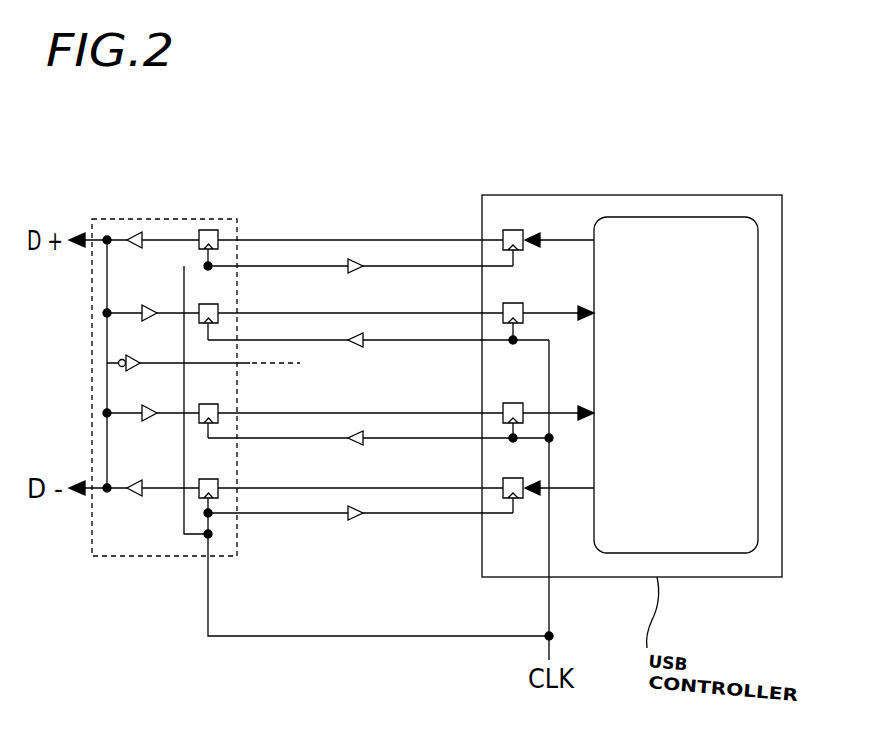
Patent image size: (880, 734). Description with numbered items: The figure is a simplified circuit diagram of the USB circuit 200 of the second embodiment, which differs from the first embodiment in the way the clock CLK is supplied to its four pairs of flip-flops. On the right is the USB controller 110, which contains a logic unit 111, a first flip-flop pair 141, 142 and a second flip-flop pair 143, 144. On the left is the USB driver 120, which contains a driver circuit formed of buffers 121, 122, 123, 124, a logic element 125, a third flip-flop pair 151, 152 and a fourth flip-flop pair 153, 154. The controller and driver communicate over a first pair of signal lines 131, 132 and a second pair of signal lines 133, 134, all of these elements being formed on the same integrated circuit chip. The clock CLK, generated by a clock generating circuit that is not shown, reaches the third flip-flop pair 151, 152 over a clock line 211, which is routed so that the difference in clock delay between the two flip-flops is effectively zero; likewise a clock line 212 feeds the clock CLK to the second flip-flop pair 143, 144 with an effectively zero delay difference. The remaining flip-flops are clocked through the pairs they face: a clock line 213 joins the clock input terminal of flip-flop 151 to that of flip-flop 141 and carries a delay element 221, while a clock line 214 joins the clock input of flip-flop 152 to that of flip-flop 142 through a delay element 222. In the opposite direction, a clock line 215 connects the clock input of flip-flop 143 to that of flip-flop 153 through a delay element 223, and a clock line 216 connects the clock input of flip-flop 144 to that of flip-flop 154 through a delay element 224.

The USB circuit 200 is at (748, 112).
The USB controller 110 is at (619, 195).
The logic unit 111 is at (759, 337).
The USB driver 120 is at (113, 218).
The buffer 121 is at (140, 232).
The buffer 122 is at (133, 481).
The buffer 123 is at (150, 305).
The buffer 124 is at (157, 395).
The logic element 125 is at (134, 359).
The first signal line 131 is at (334, 240).
The first signal line 132 is at (292, 488).
The second signal line 133 is at (296, 313).
The second signal line 134 is at (340, 413).
The flip-flop 141 is at (517, 229).
The flip-flop 142 is at (506, 478).
The flip-flop 143 is at (506, 303).
The flip-flop 144 is at (506, 403).
The flip-flop 151 is at (209, 229).
The flip-flop 152 is at (215, 479).
The flip-flop 153 is at (215, 305).
The flip-flop 154 is at (215, 404).
The clock line 211 is at (273, 638).
The clock line 212 is at (550, 606).
The clock line 213 is at (270, 266).
The clock line 214 is at (295, 516).
The clock line 215 is at (272, 340).
The clock line 216 is at (274, 438).
The delay element 221 is at (362, 265).
The delay element 222 is at (358, 522).
The delay element 223 is at (370, 340).
The delay element 224 is at (368, 437).